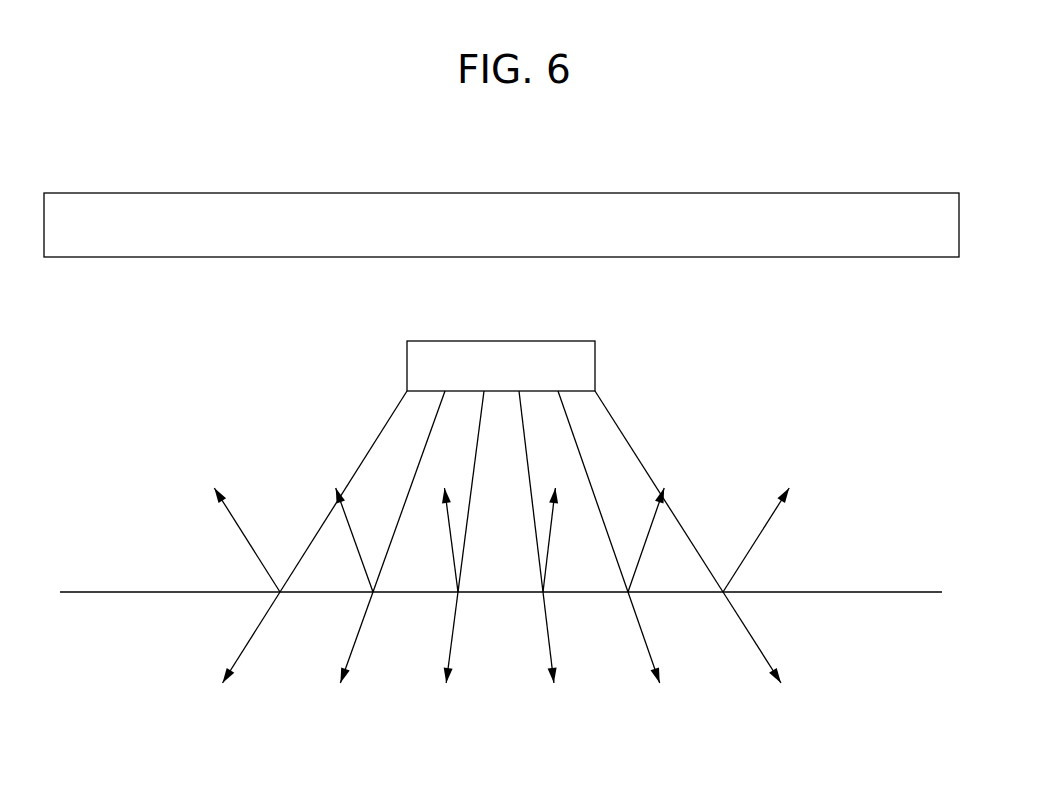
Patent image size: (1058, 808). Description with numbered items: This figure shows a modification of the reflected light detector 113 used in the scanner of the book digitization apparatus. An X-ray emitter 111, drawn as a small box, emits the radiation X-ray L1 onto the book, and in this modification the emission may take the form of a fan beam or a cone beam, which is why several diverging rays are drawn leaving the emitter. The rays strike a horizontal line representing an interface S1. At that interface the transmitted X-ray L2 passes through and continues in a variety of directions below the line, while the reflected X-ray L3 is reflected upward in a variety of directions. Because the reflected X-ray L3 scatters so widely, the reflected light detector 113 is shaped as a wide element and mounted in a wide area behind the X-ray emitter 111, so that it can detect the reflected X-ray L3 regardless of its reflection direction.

The reflected light detector 113 is at (710, 193).
The X-ray emitter 111 is at (523, 341).
The interface S1 is at (822, 592).
The radiation X-ray L1 is at (634, 444).
The transmitted X-ray L2 is at (766, 654).
The reflected X-ray L3 is at (790, 508).